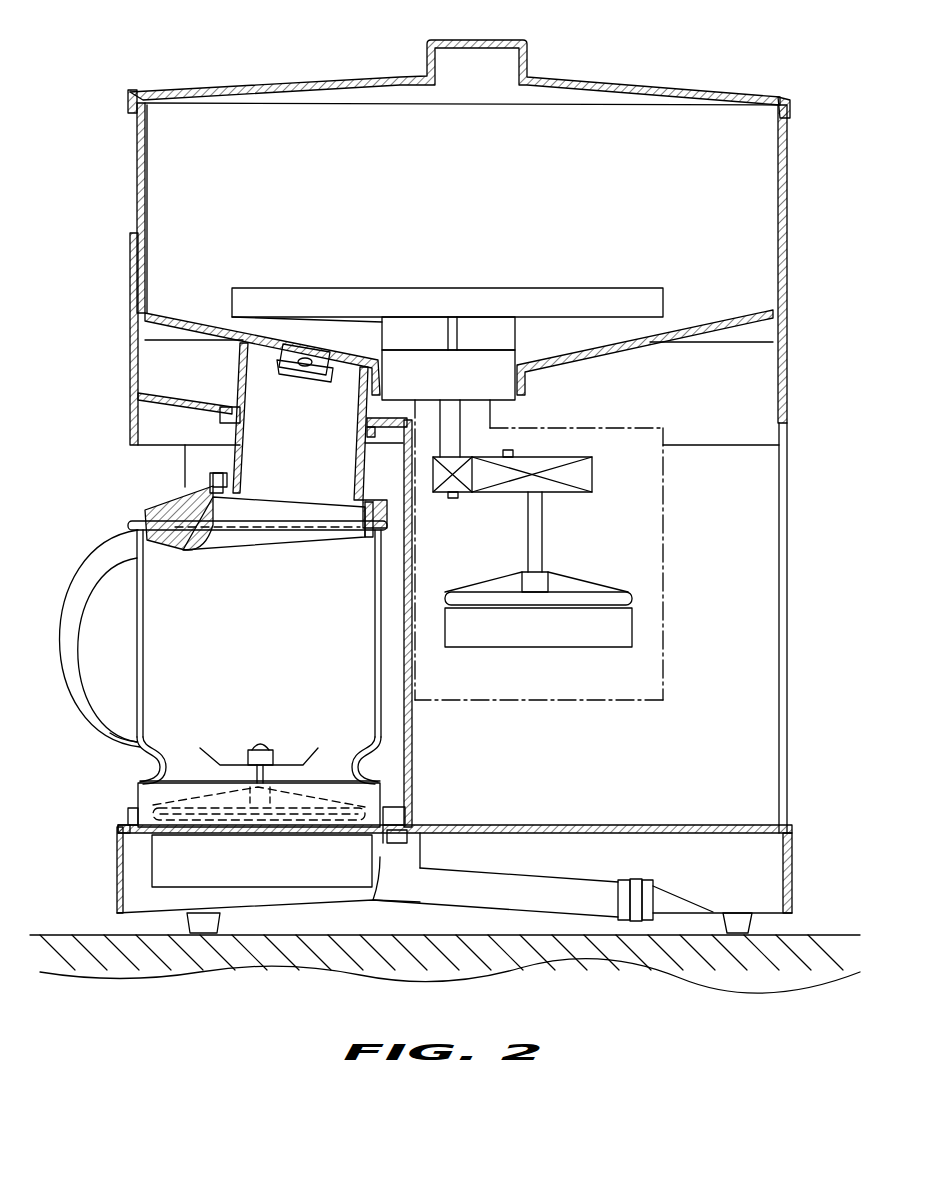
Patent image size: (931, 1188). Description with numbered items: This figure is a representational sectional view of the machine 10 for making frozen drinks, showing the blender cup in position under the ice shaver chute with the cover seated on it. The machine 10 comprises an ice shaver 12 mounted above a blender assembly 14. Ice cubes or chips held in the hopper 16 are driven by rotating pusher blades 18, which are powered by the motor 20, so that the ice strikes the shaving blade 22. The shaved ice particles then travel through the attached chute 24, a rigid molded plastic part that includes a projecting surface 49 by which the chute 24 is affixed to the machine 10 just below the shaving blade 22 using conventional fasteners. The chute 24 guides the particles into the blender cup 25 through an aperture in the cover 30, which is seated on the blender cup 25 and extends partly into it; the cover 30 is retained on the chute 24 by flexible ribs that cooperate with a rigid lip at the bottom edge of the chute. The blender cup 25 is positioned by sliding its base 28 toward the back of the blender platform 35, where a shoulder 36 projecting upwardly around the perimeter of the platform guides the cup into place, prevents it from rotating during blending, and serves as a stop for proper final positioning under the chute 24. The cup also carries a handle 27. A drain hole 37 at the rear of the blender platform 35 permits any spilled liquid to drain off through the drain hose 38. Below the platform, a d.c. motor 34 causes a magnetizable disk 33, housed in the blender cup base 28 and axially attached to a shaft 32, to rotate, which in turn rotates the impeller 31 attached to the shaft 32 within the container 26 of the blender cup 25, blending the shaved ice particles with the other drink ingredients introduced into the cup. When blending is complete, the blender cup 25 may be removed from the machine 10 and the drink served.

The machine 10 is at (800, 386).
The ice shaver 12 is at (120, 72).
The blender assembly 14 is at (52, 920).
The hopper 16 is at (787, 165).
The pusher blades 18 is at (555, 330).
The motor 20 is at (665, 570).
The shaving blade 22 is at (297, 352).
The chute 24 is at (275, 385).
The blender cup 25 is at (135, 618).
The container 26 is at (311, 607).
The handle lower end 27 is at (97, 742).
The blender cup base 28 is at (138, 783).
The cover 30 is at (160, 497).
The impeller 31 is at (212, 758).
The shaft 32 is at (265, 768).
The magnetizable disk 33 is at (363, 810).
The d.c. motor 34 is at (152, 855).
The blender platform 35 is at (130, 815).
The shoulder 36 is at (130, 808).
The drain hole 37 is at (407, 840).
The drain hose 38 is at (565, 882).
The projecting surface 49 is at (367, 437).